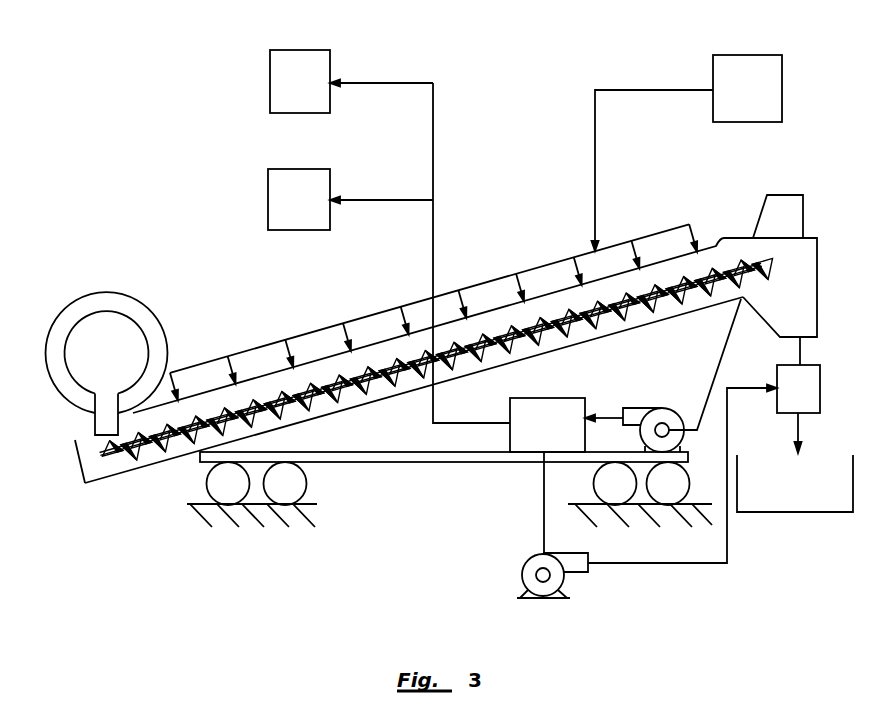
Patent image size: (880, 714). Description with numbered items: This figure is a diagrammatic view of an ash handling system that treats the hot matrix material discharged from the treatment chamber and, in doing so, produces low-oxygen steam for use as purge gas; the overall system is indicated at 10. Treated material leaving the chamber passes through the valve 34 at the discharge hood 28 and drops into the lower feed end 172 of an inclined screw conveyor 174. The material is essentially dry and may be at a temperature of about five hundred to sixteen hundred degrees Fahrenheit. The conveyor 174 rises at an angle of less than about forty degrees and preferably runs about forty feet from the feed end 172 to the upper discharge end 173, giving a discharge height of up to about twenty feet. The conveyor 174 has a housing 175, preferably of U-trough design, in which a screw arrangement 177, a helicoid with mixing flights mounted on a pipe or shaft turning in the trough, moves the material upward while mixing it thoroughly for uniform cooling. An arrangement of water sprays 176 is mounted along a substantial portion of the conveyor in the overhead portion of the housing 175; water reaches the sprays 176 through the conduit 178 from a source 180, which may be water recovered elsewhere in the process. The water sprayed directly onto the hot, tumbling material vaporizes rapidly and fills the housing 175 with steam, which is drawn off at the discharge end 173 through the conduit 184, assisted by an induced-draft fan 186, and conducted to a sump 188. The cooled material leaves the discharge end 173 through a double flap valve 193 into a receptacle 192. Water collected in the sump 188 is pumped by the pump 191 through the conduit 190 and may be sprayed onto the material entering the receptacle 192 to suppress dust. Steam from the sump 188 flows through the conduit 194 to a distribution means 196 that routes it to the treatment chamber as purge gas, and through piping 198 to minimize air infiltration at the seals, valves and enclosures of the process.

The metallurgical vessel 10 is at (104, 276).
The valve 34 is at (152, 300).
The discharge hood 28 is at (70, 377).
The lower feed end 172 is at (85, 483).
The discharge end 173 is at (818, 247).
The inclined screw conveyor 174 is at (356, 415).
The housing 175 is at (317, 420).
The water sprays 176 is at (502, 276).
The screw arrangement 177 is at (152, 443).
The conduit 178 is at (617, 87).
The water source 180 is at (752, 54).
The conduit 184 is at (724, 344).
The I.D. fan 186 is at (660, 406).
The sump 188 is at (545, 397).
The conduit 190 is at (678, 566).
The pump 191 is at (520, 573).
The receptacle 192 is at (798, 514).
The double flap valve 193 is at (777, 371).
The conduit 194 is at (435, 142).
The distribution means 196 is at (330, 51).
The piping 198 is at (330, 172).